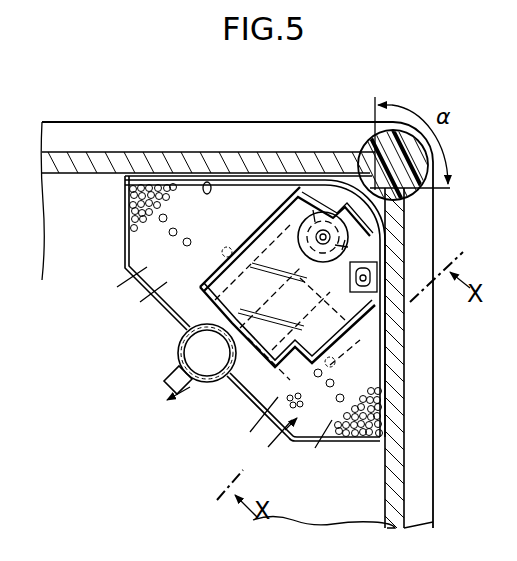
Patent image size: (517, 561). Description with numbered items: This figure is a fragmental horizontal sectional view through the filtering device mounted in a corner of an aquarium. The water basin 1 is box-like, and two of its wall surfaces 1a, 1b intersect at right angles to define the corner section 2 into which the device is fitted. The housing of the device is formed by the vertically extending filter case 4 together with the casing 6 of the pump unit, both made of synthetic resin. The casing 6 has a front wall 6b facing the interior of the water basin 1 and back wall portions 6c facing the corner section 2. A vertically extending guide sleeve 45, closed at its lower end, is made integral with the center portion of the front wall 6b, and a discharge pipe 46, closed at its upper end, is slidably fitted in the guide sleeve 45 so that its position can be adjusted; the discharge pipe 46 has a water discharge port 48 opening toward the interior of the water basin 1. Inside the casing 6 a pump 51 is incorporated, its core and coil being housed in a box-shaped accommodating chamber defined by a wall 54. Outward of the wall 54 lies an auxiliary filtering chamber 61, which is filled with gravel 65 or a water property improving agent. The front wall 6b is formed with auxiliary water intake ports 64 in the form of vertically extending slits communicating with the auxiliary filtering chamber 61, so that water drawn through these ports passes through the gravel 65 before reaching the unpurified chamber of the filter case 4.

The water basin 1 is at (412, 397).
The wall surface 1a is at (318, 154).
The wall surface 1b is at (400, 222).
The corner section 2 is at (357, 138).
The filter case 4 is at (335, 452).
The casing 6 is at (244, 176).
The front wall 6b is at (172, 318).
The back wall portion 6c is at (388, 360).
The guide sleeve 45 is at (222, 384).
The discharge pipe 46 is at (200, 361).
The water discharge port 48 is at (186, 392).
The pump 51 is at (266, 219).
The wall 54 is at (213, 281).
The auxiliary filtering chamber 61 is at (207, 182).
The auxiliary water intake ports 64 is at (149, 296).
The gravel 65 is at (378, 412).